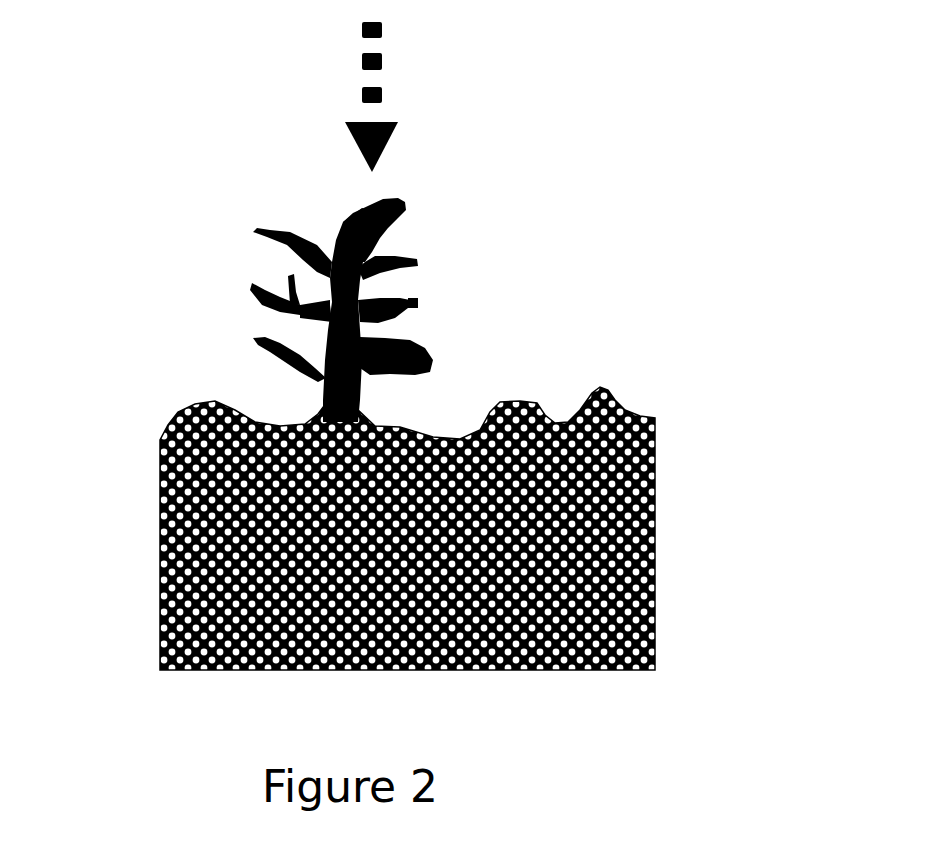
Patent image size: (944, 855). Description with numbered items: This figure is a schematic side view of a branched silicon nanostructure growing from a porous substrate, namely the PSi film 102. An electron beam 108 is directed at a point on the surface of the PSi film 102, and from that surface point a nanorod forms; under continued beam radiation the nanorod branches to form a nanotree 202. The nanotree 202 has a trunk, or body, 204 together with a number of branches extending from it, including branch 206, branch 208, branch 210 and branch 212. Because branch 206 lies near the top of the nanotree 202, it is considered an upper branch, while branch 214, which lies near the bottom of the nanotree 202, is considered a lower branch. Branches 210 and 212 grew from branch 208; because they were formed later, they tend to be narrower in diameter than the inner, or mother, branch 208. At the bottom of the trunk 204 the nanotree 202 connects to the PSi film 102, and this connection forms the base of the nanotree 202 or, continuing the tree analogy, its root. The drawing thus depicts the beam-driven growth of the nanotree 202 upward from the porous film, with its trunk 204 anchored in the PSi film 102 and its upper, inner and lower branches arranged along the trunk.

The PSi film 102 is at (655, 515).
The electron beam 108 is at (380, 47).
The nanotree 202 is at (407, 260).
The trunk 204 is at (363, 395).
The branch 206 is at (287, 232).
The branch 208 is at (320, 320).
The branch 210 is at (257, 288).
The branch 212 is at (287, 290).
The branch 214 is at (287, 363).